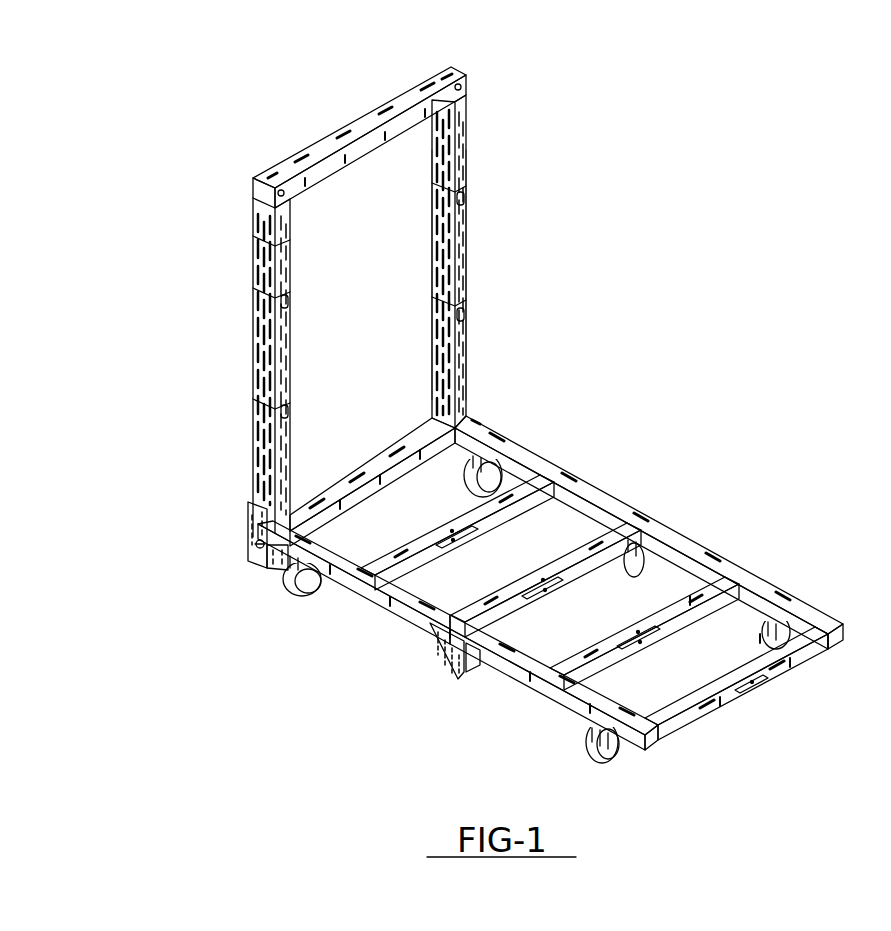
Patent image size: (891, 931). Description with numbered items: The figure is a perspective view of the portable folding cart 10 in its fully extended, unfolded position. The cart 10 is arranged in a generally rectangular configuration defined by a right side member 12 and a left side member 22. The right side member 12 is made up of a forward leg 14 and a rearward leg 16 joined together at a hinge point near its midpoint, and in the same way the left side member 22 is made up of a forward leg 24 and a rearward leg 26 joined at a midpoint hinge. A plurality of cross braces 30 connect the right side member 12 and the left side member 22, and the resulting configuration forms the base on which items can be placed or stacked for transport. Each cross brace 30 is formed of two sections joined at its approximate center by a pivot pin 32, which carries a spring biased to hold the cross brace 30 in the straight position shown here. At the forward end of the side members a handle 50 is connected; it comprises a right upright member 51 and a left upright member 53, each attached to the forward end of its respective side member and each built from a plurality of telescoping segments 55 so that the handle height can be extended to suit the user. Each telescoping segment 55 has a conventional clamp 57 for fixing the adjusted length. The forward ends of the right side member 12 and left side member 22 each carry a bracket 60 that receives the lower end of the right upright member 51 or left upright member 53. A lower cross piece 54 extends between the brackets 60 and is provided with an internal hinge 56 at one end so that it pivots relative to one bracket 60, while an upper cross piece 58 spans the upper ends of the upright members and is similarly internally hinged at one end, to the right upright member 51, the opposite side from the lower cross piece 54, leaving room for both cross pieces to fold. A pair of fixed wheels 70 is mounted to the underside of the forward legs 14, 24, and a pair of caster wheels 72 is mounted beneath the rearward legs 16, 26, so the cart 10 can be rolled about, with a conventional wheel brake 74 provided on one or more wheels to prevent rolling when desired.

The portable folding cart 10 is at (704, 347).
The right side member 12 is at (658, 498).
The forward leg 14 is at (532, 462).
The rearward leg 16 is at (715, 563).
The left side member 22 is at (428, 683).
The forward leg 24 is at (372, 580).
The rearward leg 26 is at (530, 670).
The cross brace 30 is at (415, 553).
The pivot pin 32 is at (455, 533).
The handle 50 is at (263, 157).
The right upright member 51 is at (458, 262).
The left upright member 53 is at (257, 330).
The lower cross piece 54 is at (402, 471).
The telescoping segment 55 is at (277, 240).
The internal hinge 56 is at (463, 90).
The clamp 57 is at (292, 301).
The upper cross piece 58 is at (357, 112).
The bracket 60 is at (252, 537).
The fixed wheel 70 is at (301, 598).
The caster wheel 72 is at (594, 757).
The wheel brake 74 is at (803, 637).